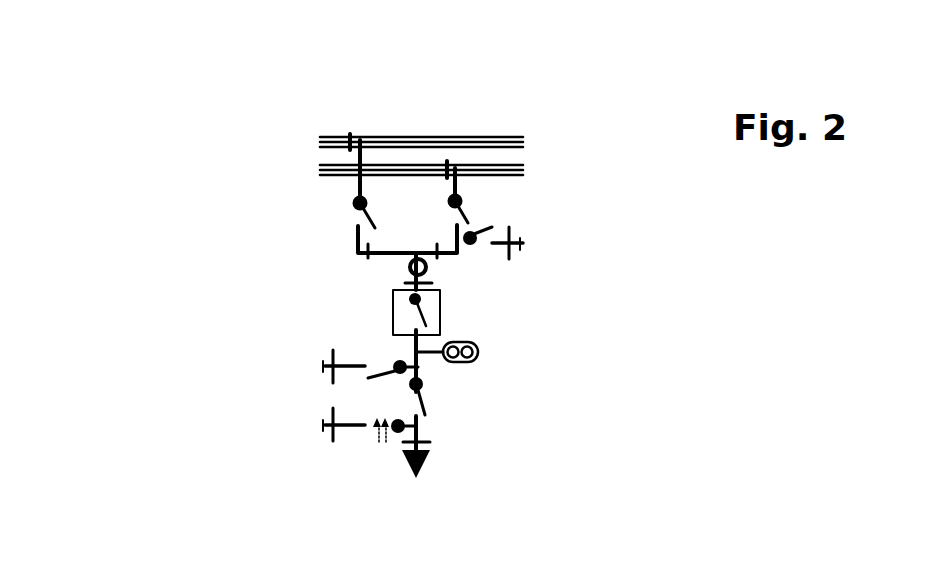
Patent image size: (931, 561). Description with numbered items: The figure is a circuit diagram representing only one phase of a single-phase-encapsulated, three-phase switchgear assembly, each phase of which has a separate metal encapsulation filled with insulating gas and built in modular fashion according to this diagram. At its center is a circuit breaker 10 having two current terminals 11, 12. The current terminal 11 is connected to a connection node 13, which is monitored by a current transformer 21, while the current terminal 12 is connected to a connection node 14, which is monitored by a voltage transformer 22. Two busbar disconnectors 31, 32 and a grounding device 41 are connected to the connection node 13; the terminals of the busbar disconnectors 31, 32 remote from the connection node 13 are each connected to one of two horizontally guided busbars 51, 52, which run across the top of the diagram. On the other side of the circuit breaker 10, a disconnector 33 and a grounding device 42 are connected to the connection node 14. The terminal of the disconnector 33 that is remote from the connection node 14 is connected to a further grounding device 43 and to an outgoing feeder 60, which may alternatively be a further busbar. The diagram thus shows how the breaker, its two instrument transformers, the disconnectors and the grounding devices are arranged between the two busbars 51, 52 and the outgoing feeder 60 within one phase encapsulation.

The circuit breaker 10 is at (405, 317).
The current terminal 11 is at (407, 287).
The current terminal 12 is at (410, 344).
The connection node 13 is at (425, 246).
The connection node 14 is at (420, 367).
The current transformer 21 is at (428, 266).
The voltage transformer 22 is at (478, 347).
The busbar disconnector 31 is at (463, 199).
The busbar disconnector 32 is at (352, 202).
The disconnector 33 is at (425, 404).
The grounding device 41 is at (523, 243).
The grounding device 42 is at (380, 375).
The grounding device 43 is at (375, 438).
The busbar 51 is at (498, 164).
The busbar 52 is at (387, 136).
The outgoing feeder 60 is at (422, 463).